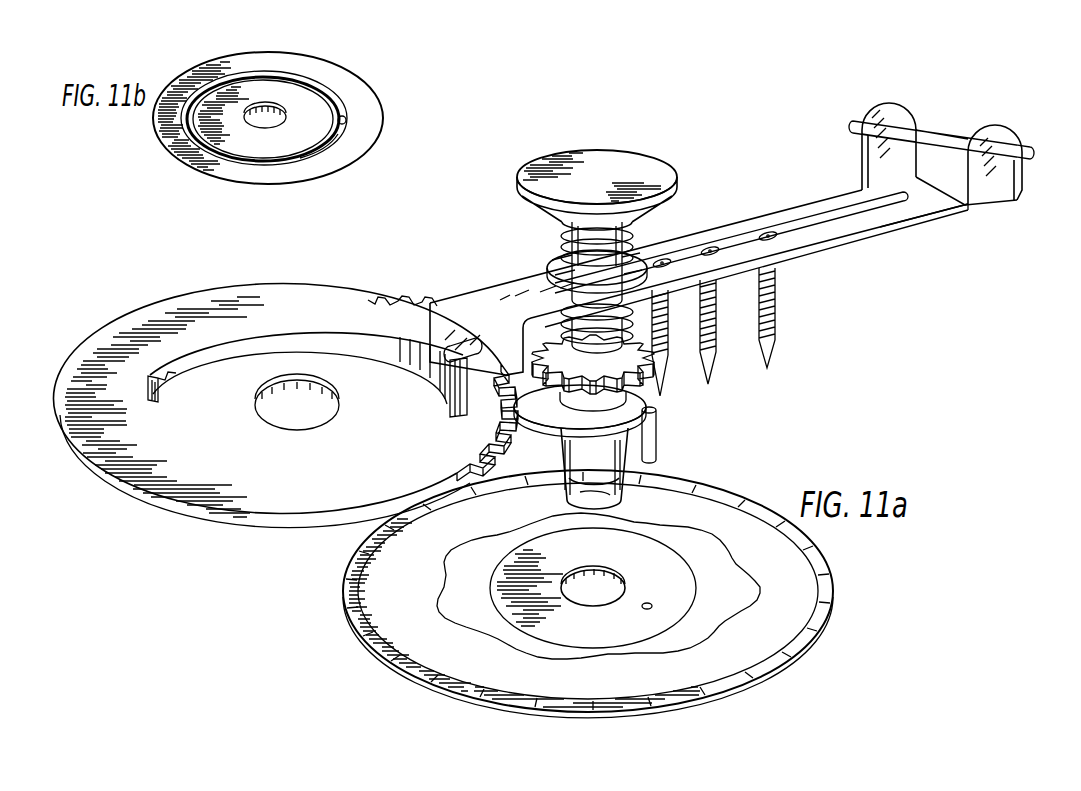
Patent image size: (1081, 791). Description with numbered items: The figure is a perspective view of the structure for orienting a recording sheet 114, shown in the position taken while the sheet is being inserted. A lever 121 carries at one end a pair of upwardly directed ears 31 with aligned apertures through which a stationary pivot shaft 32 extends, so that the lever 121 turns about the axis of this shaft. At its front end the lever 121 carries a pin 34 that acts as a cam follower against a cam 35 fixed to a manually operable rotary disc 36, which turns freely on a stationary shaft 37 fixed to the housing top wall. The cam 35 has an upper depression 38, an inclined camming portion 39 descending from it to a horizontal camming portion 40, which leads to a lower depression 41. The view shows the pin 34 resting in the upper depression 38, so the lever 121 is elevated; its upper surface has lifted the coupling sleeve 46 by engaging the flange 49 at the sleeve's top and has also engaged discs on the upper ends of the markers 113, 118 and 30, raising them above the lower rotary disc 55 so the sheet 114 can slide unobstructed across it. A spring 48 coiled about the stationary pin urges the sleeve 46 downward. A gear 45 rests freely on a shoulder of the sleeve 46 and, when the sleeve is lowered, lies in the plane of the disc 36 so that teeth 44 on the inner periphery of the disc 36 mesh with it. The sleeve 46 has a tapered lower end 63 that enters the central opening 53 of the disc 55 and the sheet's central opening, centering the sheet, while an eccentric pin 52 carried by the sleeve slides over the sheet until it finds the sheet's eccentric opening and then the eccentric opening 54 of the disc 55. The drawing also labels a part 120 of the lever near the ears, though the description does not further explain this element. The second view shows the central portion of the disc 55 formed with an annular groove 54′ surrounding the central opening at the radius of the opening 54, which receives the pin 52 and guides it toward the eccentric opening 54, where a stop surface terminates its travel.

In FIG. 11a, the marker 30 is at (713, 368).
In FIG. 11a, the ears 31 is at (1024, 190).
In FIG. 11a, the pivot shaft 32 is at (1032, 150).
In FIG. 11a, the pin 34 is at (450, 347).
In FIG. 11a, the cam 35 is at (405, 352).
In FIG. 11a, the rotary disc 36 is at (277, 409).
In FIG. 11a, the stationary shaft 37 is at (580, 250).
In FIG. 11a, the depression 38 is at (452, 380).
In FIG. 11a, the inclined camming portion 39 is at (404, 306).
In FIG. 11a, the horizontal camming portion 40 is at (263, 330).
In FIG. 11a, the lower depression 41 is at (148, 378).
In FIG. 11a, the teeth 44 is at (386, 302).
In FIG. 11a, the gear 45 is at (652, 368).
In FIG. 11a, the coupling sleeve 46 is at (580, 470).
In FIG. 11a, the spring 48 is at (548, 263).
In FIG. 11a, the flange 49 is at (636, 262).
In FIG. 11a, the eccentric pin 52 is at (658, 440).
In FIG. 11a, the central opening 53 is at (598, 590).
In FIG. 11b, the eccentric opening 54 is at (348, 120).
In FIG. 11a, the eccentric opening 54 is at (652, 605).
In FIG. 11b, the annular groove 54′ is at (337, 150).
In FIG. 11b, the rotary disc 55 is at (279, 70).
In FIG. 11a, the rotary disc 55 is at (696, 588).
In FIG. 11a, the tapered lower end 63 is at (606, 494).
In FIG. 11a, the marker 113 is at (662, 390).
In FIG. 11a, the recording sheet 114 is at (832, 592).
In FIG. 11a, the marker 118 is at (770, 356).
In FIG. 11a, the arm edge 120 is at (900, 222).
In FIG. 11a, the lever 121 is at (792, 224).